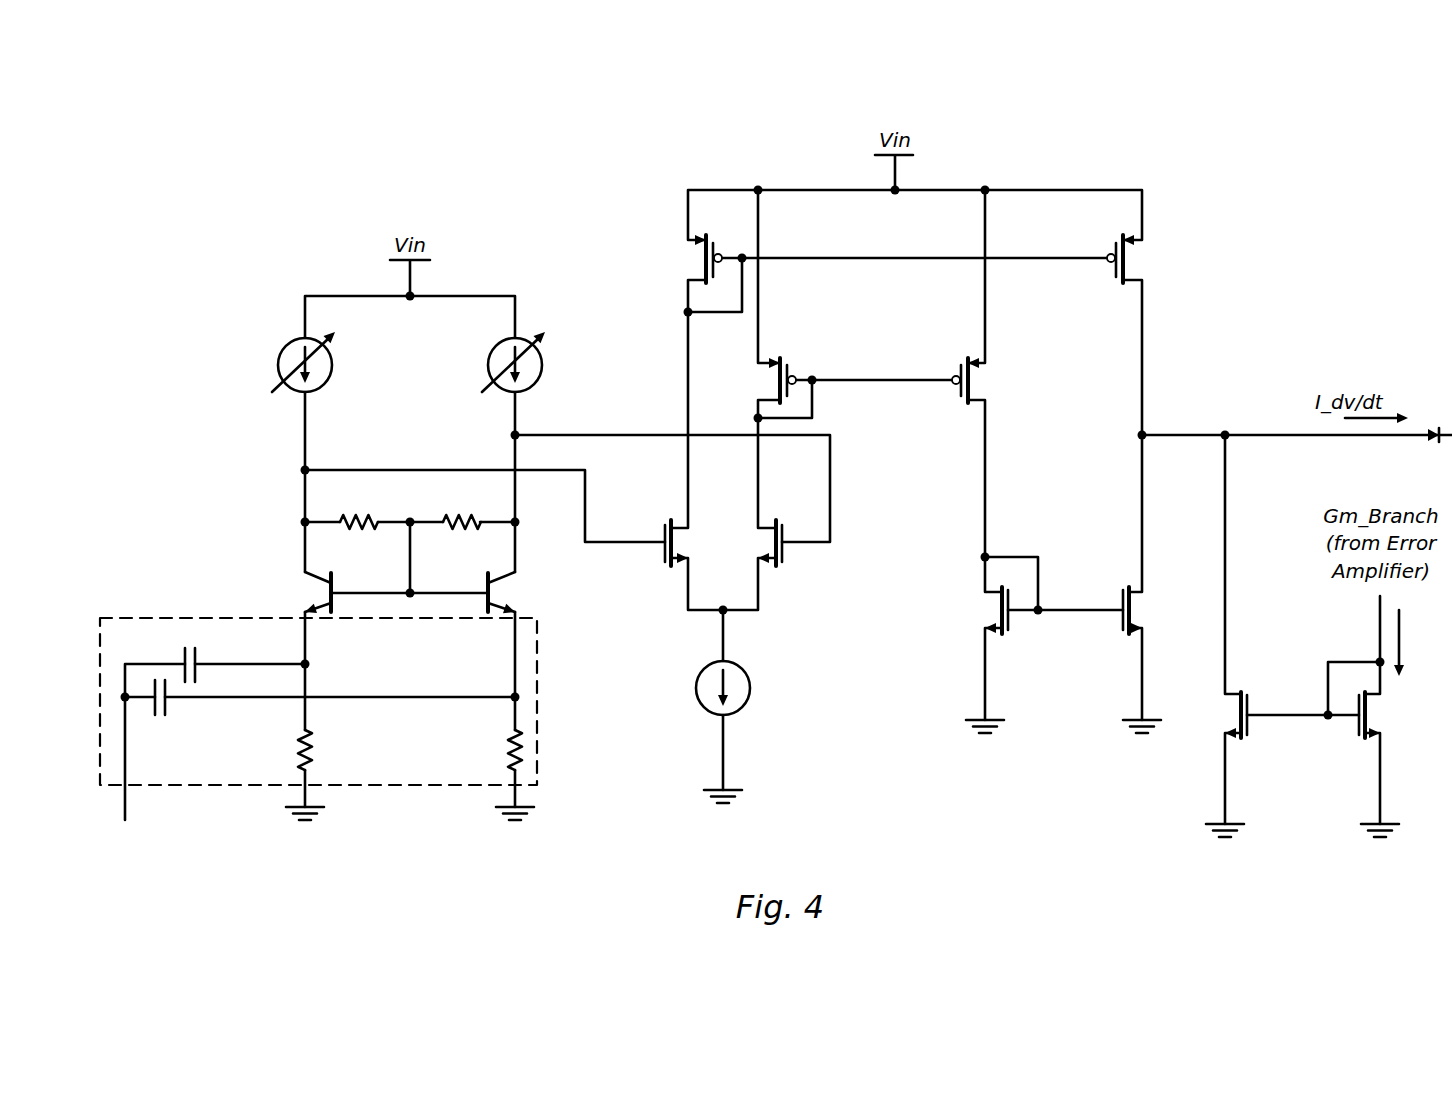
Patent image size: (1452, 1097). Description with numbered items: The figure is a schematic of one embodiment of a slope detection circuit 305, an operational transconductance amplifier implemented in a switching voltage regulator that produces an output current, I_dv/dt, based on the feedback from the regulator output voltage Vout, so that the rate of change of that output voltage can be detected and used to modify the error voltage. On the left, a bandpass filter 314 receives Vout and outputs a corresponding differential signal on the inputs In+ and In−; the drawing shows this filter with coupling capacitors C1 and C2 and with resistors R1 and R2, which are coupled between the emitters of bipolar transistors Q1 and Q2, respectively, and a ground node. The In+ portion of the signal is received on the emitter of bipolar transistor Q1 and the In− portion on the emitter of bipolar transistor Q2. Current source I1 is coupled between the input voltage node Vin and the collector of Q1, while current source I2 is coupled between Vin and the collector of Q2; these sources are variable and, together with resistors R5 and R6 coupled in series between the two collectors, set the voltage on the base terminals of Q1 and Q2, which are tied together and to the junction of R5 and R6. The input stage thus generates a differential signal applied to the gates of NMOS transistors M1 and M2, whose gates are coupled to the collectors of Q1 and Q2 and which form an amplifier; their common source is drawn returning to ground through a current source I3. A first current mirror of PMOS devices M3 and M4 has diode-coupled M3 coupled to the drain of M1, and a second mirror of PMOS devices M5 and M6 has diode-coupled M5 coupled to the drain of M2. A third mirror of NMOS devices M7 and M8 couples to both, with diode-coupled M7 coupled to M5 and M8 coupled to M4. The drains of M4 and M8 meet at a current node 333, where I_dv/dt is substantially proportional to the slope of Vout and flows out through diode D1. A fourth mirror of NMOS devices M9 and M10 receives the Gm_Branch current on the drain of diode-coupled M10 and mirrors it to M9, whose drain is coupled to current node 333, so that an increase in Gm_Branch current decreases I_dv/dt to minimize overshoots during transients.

The slope detection circuit 305 is at (1117, 103).
The current node 333 is at (1152, 428).
The bandpass filter 314 is at (318, 732).
The current source I1 is at (316, 362).
The current source I2 is at (526, 362).
The tail current source I3 is at (736, 688).
The resistor R1 is at (288, 750).
The resistor R2 is at (497, 750).
The resistor R5 is at (359, 509).
The resistor R6 is at (462, 509).
The capacitor C1 is at (190, 654).
The capacitor C2 is at (160, 710).
The bipolar transistor Q1 is at (311, 592).
The bipolar transistor Q2 is at (509, 592).
The NMOS transistor M1 is at (687, 543).
The NMOS transistor M2 is at (760, 543).
The PMOS transistor M3 is at (696, 259).
The PMOS transistor M4 is at (1134, 259).
The PMOS transistor M5 is at (770, 380).
The PMOS transistor M6 is at (979, 380).
The NMOS transistor M7 is at (985, 610).
The NMOS transistor M8 is at (1144, 610).
The NMOS transistor M9 is at (1226, 715).
The NMOS transistor M10 is at (1387, 715).
The diode D1 is at (1435, 449).